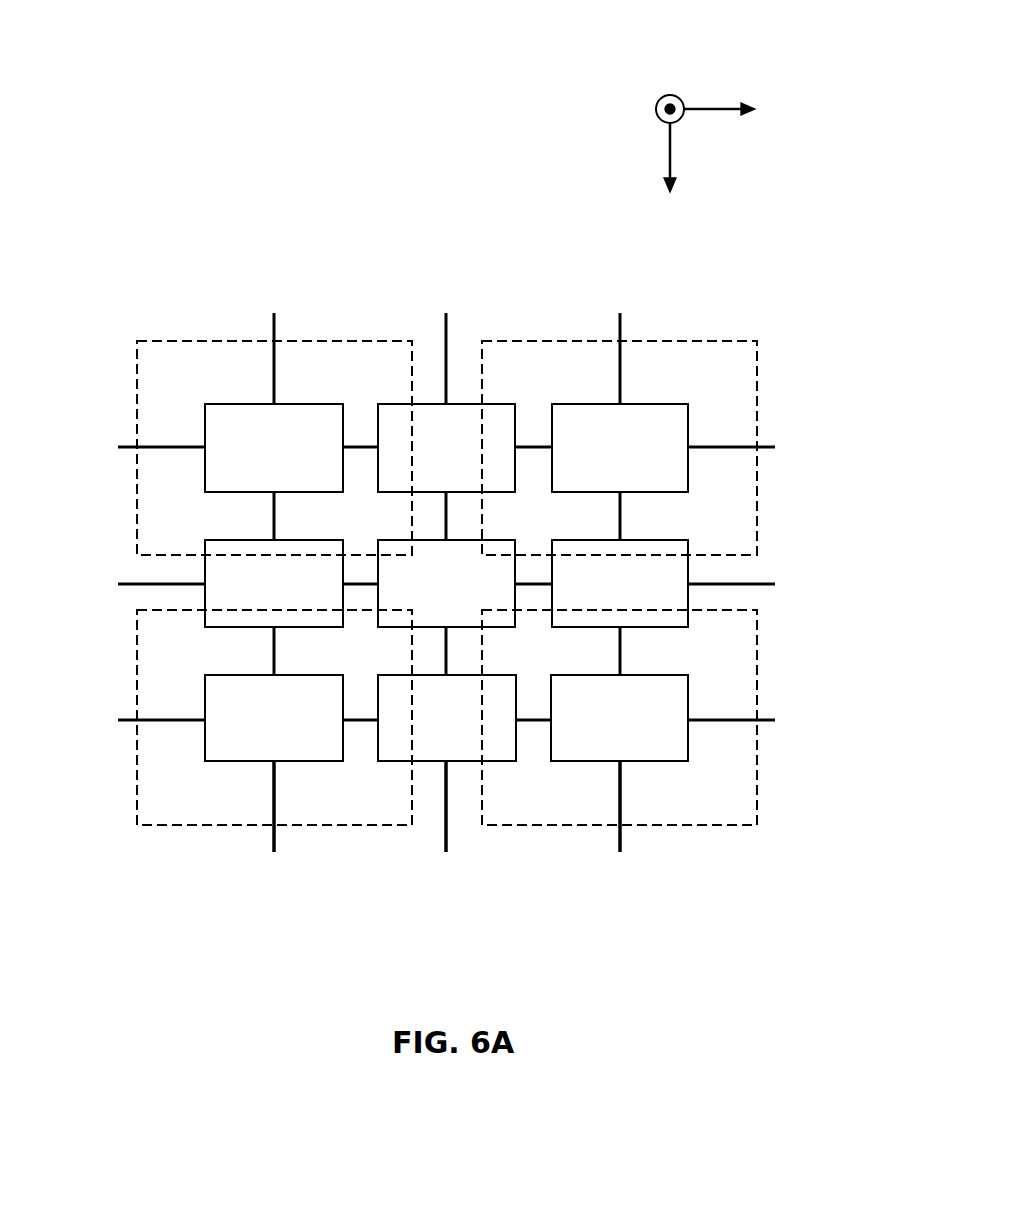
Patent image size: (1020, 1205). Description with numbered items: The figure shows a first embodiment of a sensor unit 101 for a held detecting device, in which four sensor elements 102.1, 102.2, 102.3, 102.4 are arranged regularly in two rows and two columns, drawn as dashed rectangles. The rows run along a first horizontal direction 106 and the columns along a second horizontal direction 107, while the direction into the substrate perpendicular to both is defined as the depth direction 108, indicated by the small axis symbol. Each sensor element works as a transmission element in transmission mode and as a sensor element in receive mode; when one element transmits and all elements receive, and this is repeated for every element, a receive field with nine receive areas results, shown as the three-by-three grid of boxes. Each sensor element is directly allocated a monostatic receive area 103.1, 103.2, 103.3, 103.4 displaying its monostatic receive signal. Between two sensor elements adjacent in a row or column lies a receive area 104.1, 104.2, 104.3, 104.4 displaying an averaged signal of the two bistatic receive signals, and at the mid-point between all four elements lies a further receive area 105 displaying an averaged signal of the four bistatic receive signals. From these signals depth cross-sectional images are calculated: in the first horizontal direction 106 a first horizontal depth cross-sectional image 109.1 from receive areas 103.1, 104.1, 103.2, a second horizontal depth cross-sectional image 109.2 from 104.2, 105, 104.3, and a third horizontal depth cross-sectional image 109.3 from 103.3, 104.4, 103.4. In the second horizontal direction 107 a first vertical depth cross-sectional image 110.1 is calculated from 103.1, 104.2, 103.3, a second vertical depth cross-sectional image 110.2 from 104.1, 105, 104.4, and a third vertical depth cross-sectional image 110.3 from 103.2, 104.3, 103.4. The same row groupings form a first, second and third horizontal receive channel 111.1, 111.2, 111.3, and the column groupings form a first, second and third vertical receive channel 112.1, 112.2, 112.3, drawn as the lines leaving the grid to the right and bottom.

The sensor unit 101 is at (442, 128).
The sensor element 102.1 is at (167, 340).
The sensor element 102.2 is at (720, 340).
The sensor element 102.3 is at (175, 827).
The sensor element 102.4 is at (737, 827).
The monostatic receive area 103.1 is at (274, 448).
The monostatic receive area 103.2 is at (620, 448).
The monostatic receive area 103.3 is at (274, 718).
The monostatic receive area 103.4 is at (619, 718).
The receive area 104.1 is at (446, 448).
The receive area 104.2 is at (274, 583).
The receive area 104.3 is at (620, 583).
The receive area 104.4 is at (447, 718).
The further receive area 105 is at (446, 583).
The first horizontal direction 106 is at (722, 111).
The second horizontal direction 107 is at (670, 155).
The depth direction 108 is at (670, 95).
The first horizontal depth cross-sectional image 109.1 is at (130, 448).
The second horizontal depth cross-sectional image 109.2 is at (130, 585).
The third horizontal depth cross-sectional image 109.3 is at (130, 721).
The first vertical depth cross-sectional image 110.1 is at (275, 568).
The second vertical depth cross-sectional image 110.2 is at (446, 568).
The third vertical depth cross-sectional image 110.3 is at (620, 568).
The first horizontal receive channel 111.1 is at (710, 433).
The second horizontal receive channel 111.2 is at (710, 569).
The third horizontal receive channel 111.3 is at (710, 707).
The first vertical receive channel 112.1 is at (303, 785).
The second vertical receive channel 112.2 is at (469, 787).
The third vertical receive channel 112.3 is at (648, 787).